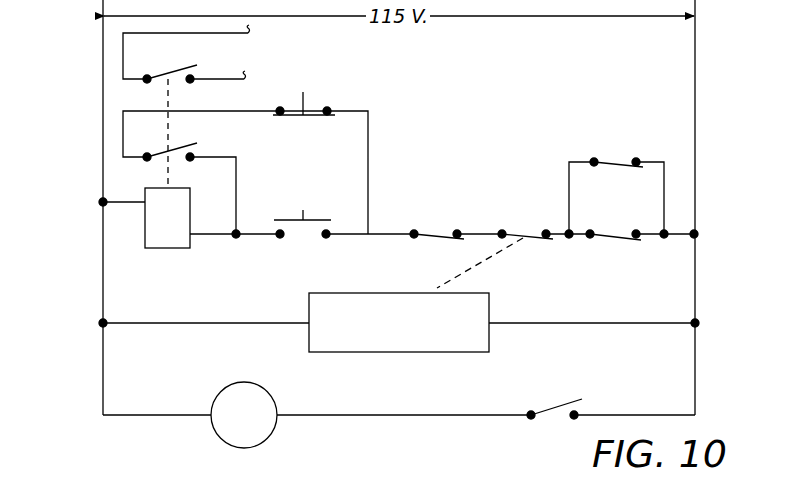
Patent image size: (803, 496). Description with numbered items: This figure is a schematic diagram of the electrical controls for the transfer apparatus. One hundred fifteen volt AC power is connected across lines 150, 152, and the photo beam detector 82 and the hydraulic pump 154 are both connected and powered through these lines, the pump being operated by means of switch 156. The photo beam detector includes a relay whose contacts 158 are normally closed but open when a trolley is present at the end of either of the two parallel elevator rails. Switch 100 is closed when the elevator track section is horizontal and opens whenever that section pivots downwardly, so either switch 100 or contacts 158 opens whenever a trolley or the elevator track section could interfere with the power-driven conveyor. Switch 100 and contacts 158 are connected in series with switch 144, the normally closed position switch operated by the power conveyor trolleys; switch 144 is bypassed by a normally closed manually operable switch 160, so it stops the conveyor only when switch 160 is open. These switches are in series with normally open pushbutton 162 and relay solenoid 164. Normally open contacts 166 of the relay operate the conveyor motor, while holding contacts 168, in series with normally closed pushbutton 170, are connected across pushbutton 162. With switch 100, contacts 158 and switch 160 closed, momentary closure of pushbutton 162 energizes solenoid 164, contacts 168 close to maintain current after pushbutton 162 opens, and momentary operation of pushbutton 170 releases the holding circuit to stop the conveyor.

The photo beam detector 82 is at (484, 318).
The switch 100 is at (438, 232).
The switch 144 is at (618, 240).
The line 150 is at (103, 143).
The line 152 is at (695, 85).
The hydraulic pump 154 is at (270, 438).
The switch 156 is at (553, 408).
The contacts 158 is at (525, 240).
The manually operable switch 160 is at (600, 167).
The pushbutton 162 is at (320, 218).
The relay solenoid 164 is at (171, 235).
The contacts 166 is at (180, 71).
The contacts 168 is at (188, 142).
The pushbutton 170 is at (306, 118).